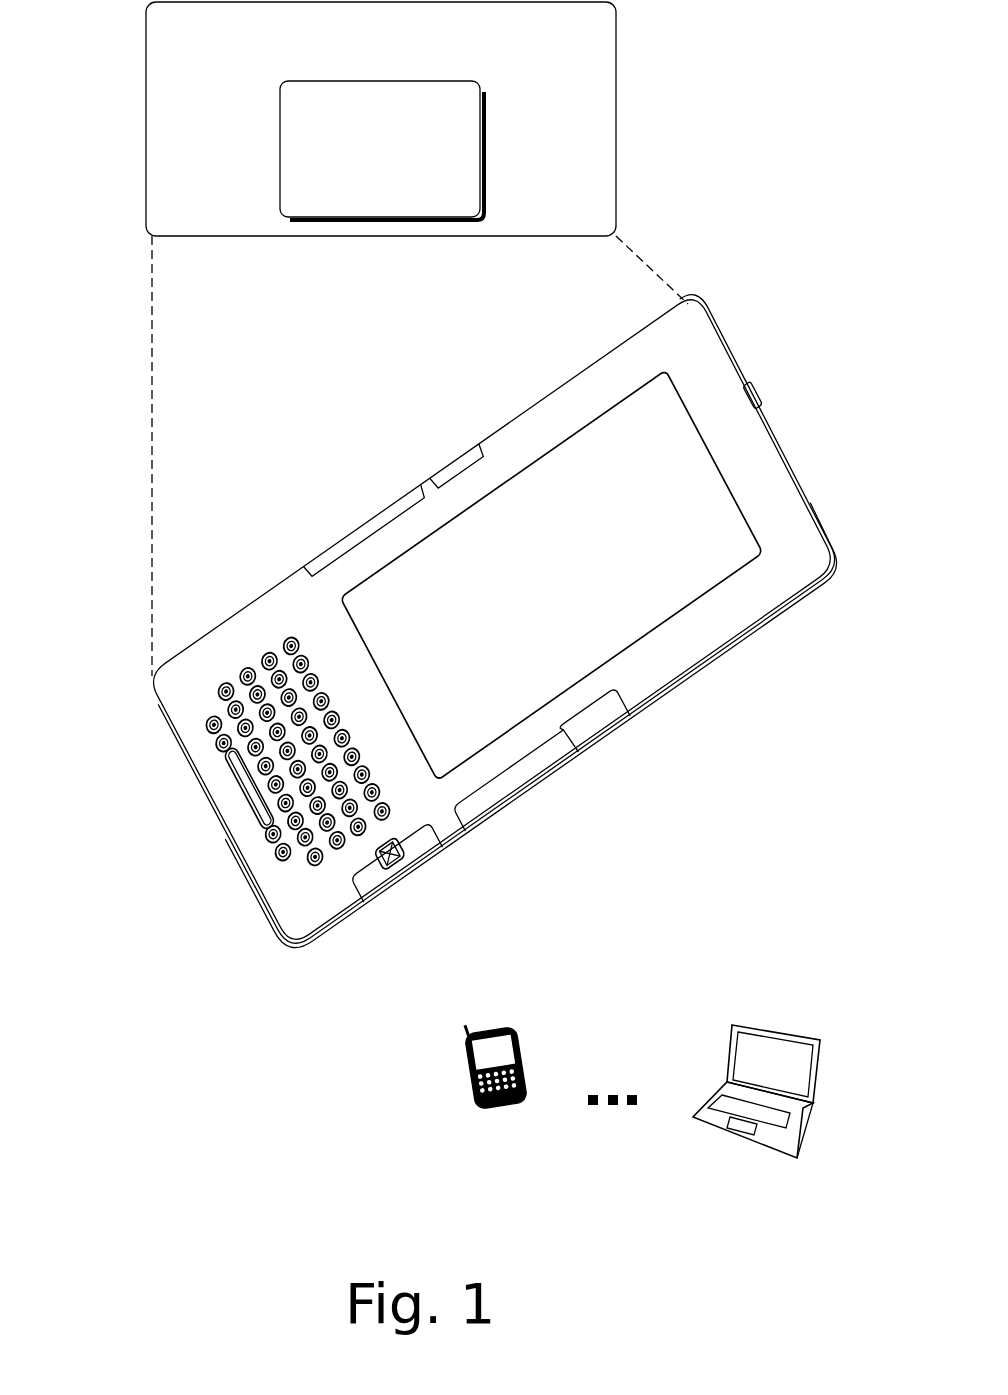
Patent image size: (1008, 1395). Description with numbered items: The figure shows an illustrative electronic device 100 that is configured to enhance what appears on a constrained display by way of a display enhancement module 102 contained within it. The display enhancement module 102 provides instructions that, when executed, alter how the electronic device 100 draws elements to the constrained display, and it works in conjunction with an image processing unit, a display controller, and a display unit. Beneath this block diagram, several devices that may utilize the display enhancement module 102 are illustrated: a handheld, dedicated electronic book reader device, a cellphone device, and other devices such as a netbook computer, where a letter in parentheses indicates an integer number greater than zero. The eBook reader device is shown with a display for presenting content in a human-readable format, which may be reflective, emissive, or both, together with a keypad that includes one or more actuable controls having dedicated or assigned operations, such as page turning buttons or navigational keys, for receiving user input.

The electronic device 100 is at (364, 60).
The display enhancement module 102 is at (364, 197).